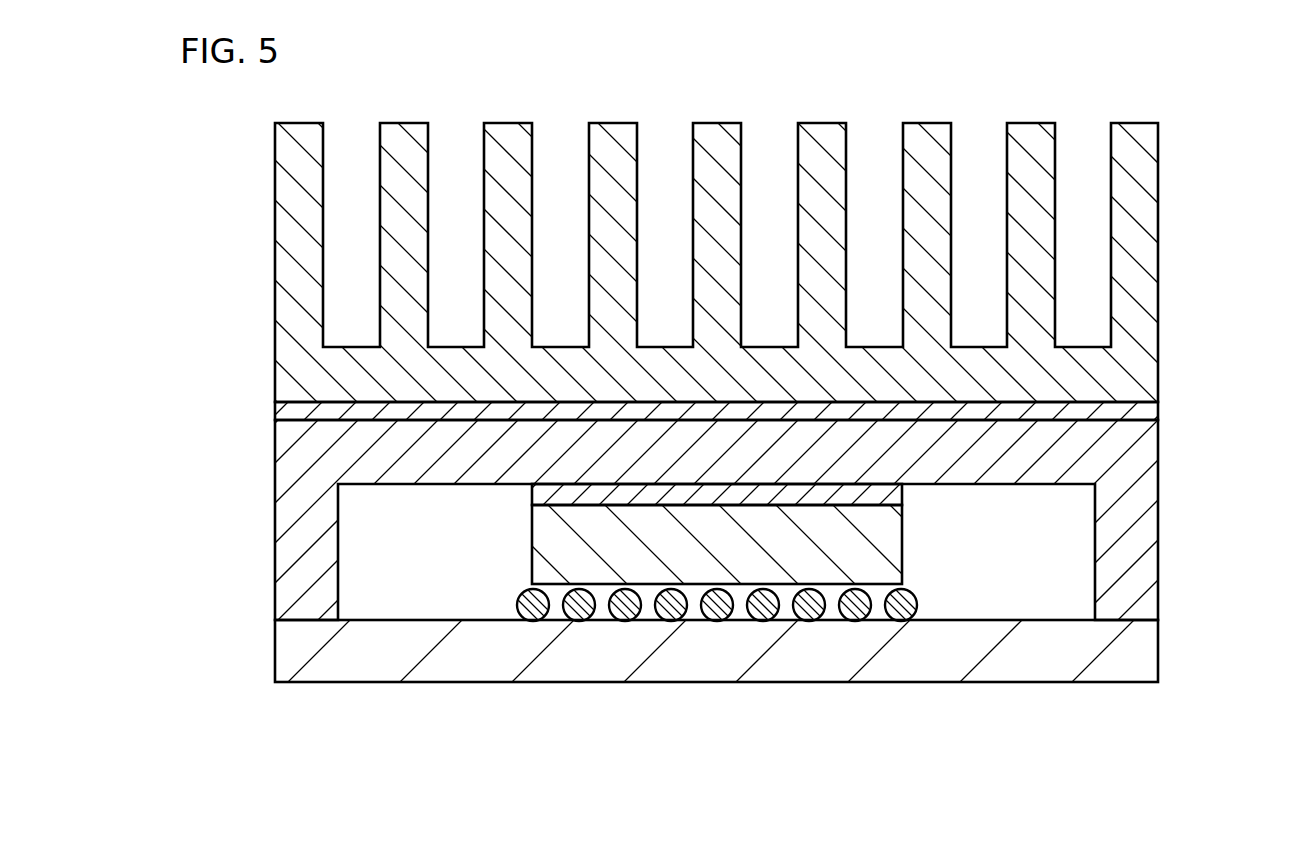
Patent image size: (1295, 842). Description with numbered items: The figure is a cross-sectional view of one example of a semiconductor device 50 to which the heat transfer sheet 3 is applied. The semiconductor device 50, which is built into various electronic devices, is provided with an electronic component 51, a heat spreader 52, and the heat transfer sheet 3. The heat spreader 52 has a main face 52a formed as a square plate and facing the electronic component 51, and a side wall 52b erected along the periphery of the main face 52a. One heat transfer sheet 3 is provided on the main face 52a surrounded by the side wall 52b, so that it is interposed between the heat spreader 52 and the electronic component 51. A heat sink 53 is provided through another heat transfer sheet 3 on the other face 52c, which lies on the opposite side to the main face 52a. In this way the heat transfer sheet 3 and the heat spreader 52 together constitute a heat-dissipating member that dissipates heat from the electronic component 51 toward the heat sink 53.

The semiconductor device 50 is at (190, 375).
The electronic component 51 is at (532, 556).
The heat spreader 52 is at (273, 447).
The main face 52a is at (1032, 484).
The side wall 52b is at (1160, 516).
The other face 52c is at (1097, 418).
The heat sink 53 is at (1160, 211).
The heat transfer sheet 3 is at (1160, 412).